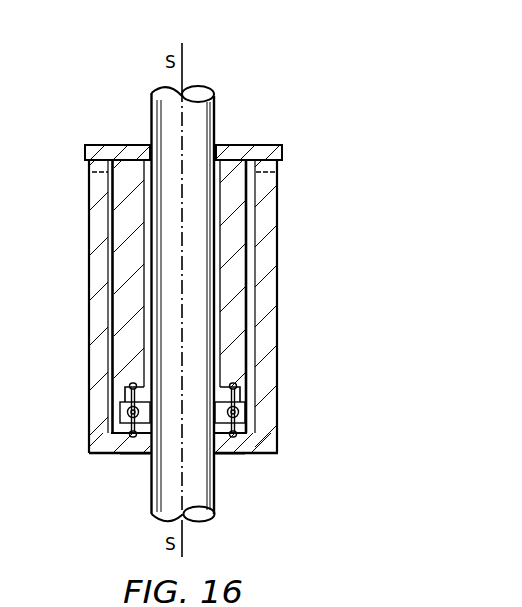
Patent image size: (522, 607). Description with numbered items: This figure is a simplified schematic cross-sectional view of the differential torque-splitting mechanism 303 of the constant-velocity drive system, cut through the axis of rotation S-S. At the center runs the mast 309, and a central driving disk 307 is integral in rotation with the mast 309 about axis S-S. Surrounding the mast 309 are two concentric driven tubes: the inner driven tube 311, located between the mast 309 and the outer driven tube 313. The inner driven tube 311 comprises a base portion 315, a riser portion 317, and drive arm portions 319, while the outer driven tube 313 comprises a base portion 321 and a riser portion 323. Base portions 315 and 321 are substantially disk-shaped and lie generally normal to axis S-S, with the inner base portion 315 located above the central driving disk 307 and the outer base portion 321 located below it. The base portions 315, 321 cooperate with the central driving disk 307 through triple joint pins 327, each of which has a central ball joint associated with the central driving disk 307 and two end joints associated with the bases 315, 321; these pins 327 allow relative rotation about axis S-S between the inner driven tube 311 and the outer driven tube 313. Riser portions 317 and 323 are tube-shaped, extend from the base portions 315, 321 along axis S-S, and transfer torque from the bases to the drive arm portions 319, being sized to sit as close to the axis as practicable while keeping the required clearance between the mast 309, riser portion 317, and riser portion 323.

The differential torque-splitting mechanism 303 is at (225, 60).
The mast 309 is at (216, 115).
The drive arm portions 319 is at (85, 152).
The outer driven tube 313 is at (82, 318).
The riser portion 317 is at (113, 208).
The inner driven tube 311 is at (106, 292).
The riser portion 323 is at (90, 240).
The base portion 315 is at (118, 385).
The central driving disk 307 is at (121, 411).
The base portion 321 is at (88, 443).
The triple joint pins 327 is at (146, 454).